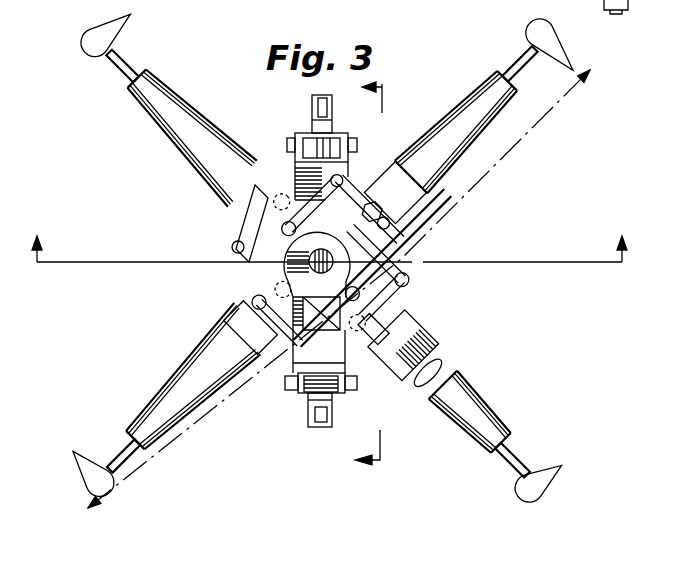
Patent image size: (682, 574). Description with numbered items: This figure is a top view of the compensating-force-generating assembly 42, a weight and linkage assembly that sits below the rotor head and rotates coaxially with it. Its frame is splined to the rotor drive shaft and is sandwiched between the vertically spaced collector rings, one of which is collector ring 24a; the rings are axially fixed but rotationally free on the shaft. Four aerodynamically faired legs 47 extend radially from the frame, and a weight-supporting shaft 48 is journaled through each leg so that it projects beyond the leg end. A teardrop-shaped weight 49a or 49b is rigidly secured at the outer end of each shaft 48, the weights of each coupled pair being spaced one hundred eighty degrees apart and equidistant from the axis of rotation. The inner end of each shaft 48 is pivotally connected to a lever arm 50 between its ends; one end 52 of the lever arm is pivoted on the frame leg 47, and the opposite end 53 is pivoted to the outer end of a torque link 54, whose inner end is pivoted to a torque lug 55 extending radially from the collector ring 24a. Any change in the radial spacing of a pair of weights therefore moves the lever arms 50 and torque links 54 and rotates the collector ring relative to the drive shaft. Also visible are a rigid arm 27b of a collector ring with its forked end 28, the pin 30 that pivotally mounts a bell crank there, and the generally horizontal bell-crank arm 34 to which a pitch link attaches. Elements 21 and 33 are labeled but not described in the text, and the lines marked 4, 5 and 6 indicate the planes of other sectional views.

The mounting member 21 is at (548, 3).
The torque-collector ring 24a is at (256, 273).
The rigid arm 27b is at (295, 172).
The forked end 28 is at (362, 145).
The pin 30 is at (293, 152).
The lower coupling 33 is at (316, 426).
The horizontal arm of bell crank 34 is at (333, 111).
The compensating-force-generating assembly 42 is at (470, 238).
The frame leg 47 is at (465, 143).
The weight-supporting shaft 48 is at (517, 72).
The teardrop-shaped weight 49a is at (532, 40).
The teardrop-shaped weight 49b is at (118, 22).
The lever arm 50 is at (255, 214).
The lever arm end 52 is at (252, 304).
The lever arm end 53 is at (231, 246).
The torque link 54 is at (236, 260).
The torque lug 55 is at (400, 298).
The section line 4- 4 is at (329, 264).
The section line 5- 5 is at (347, 289).
The section line 6- 6 is at (378, 273).